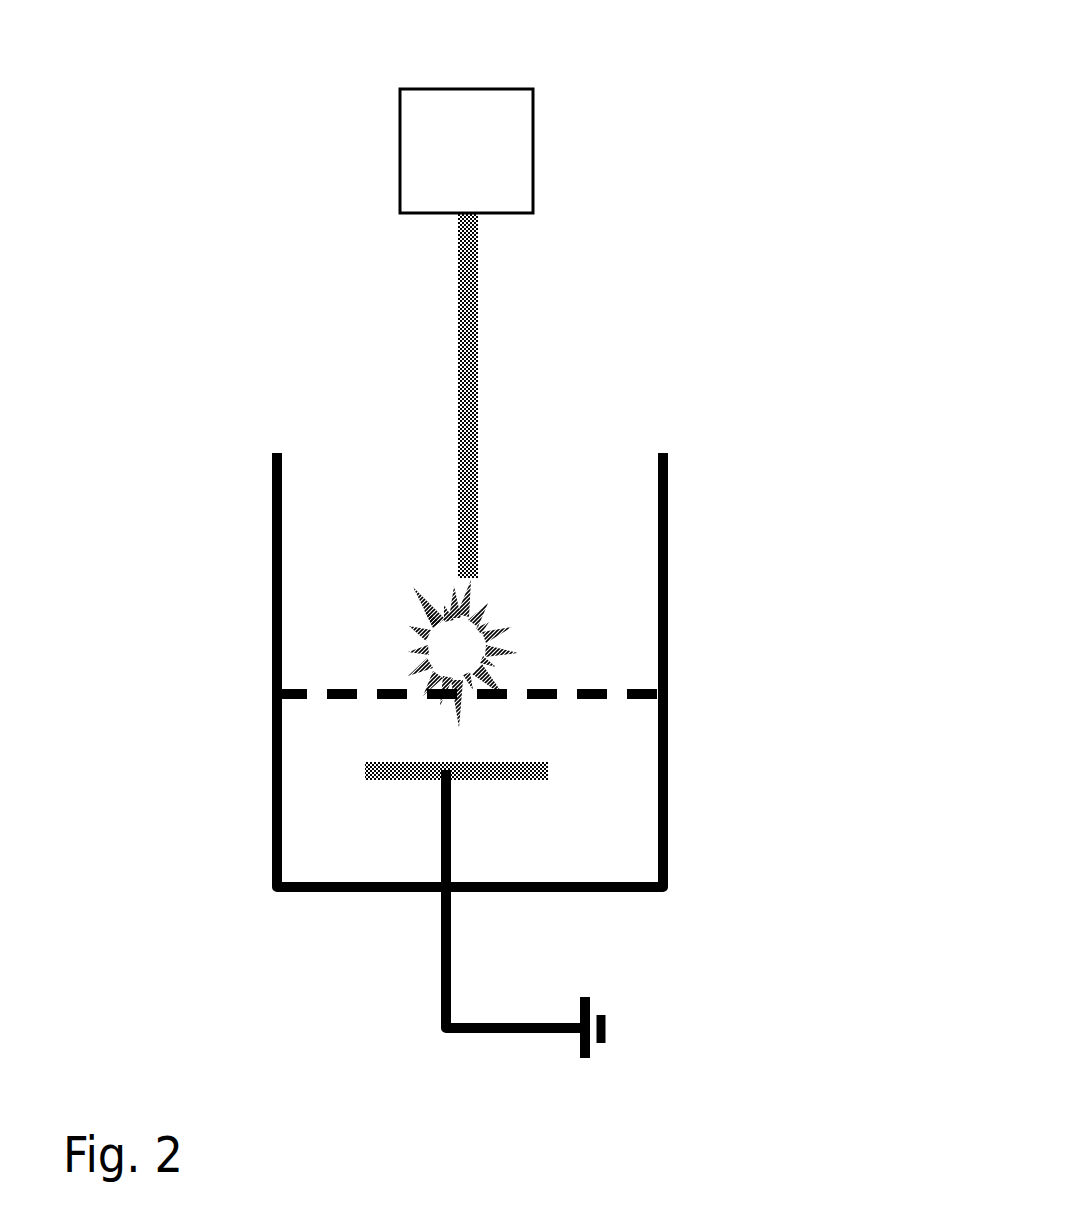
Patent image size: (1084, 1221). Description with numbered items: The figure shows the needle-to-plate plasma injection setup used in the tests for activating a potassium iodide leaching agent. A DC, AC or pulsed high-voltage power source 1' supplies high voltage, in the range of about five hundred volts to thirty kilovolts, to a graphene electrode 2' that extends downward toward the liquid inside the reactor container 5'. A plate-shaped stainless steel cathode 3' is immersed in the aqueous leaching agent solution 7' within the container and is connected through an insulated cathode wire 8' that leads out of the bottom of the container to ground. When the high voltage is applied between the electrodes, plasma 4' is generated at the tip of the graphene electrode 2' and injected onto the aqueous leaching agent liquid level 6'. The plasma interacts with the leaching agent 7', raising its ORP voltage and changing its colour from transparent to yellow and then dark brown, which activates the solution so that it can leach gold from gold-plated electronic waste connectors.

The power source 1' is at (519, 151).
The graphene electrode 2' is at (592, 395).
The 316 stainless steel cathode 3' is at (306, 788).
The plasma 4' is at (282, 631).
The reactor container 5' is at (596, 656).
The aqueous leaching agent liquid level 6' is at (616, 681).
The aqueous leaching agent solution 7' is at (571, 791).
The insulated cathode wire 8' is at (375, 914).